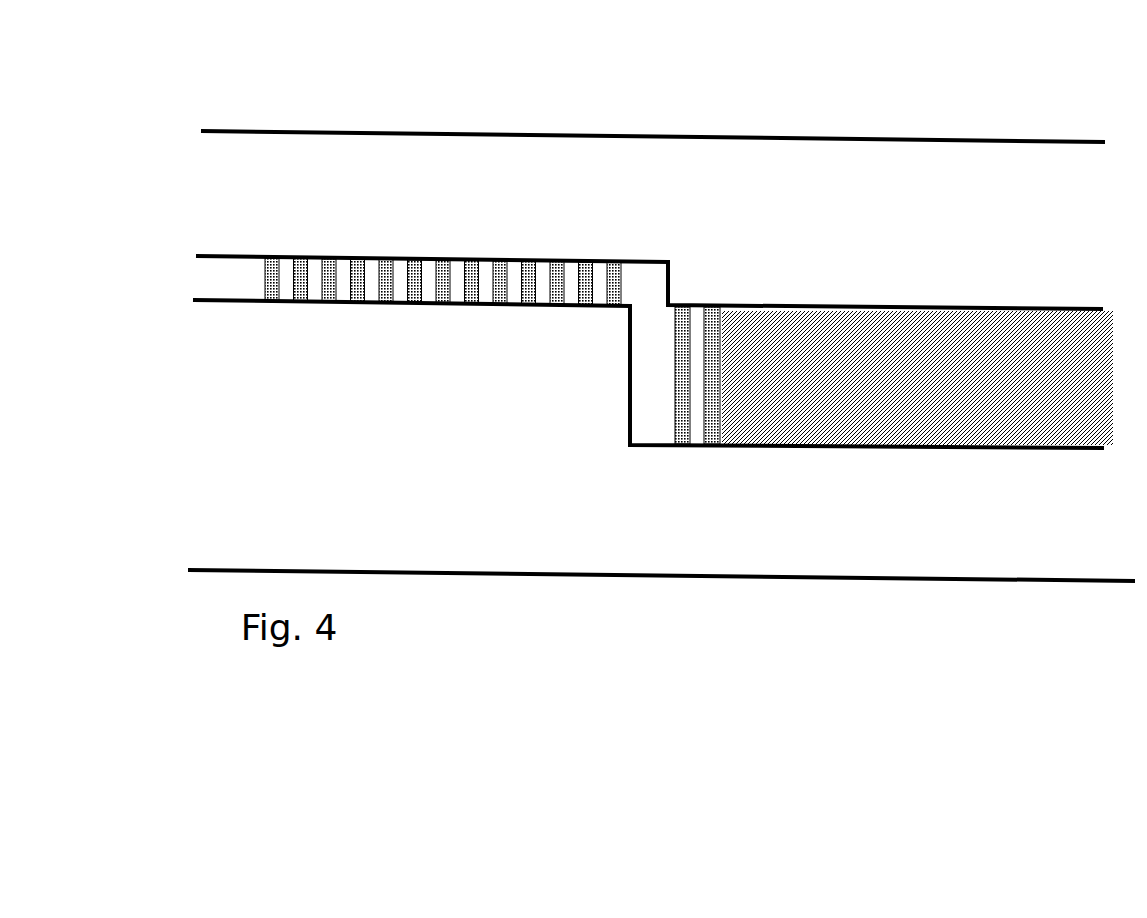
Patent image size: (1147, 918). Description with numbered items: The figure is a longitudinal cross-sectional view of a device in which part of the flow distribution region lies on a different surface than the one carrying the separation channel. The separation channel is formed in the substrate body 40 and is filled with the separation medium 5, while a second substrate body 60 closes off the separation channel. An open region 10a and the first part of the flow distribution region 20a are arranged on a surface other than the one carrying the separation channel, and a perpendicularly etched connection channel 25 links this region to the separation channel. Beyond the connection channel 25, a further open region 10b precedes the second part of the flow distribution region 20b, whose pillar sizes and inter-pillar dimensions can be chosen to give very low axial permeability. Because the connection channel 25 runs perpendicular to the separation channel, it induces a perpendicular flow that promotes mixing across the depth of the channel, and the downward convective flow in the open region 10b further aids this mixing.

The separation medium 5 is at (950, 404).
The open region 10a is at (233, 270).
The open region 10b is at (653, 387).
The first part of the flow distribution region 20a is at (433, 258).
The second part of the flow distribution region 20b is at (699, 342).
The connection channel 25 is at (647, 303).
The substrate body 40 is at (517, 515).
The substrate body 60 is at (1011, 244).